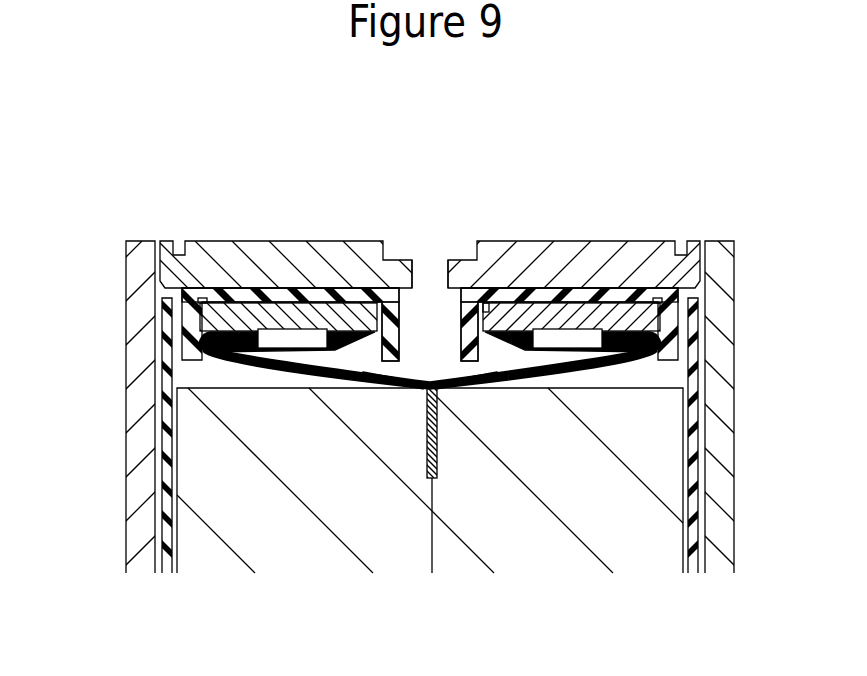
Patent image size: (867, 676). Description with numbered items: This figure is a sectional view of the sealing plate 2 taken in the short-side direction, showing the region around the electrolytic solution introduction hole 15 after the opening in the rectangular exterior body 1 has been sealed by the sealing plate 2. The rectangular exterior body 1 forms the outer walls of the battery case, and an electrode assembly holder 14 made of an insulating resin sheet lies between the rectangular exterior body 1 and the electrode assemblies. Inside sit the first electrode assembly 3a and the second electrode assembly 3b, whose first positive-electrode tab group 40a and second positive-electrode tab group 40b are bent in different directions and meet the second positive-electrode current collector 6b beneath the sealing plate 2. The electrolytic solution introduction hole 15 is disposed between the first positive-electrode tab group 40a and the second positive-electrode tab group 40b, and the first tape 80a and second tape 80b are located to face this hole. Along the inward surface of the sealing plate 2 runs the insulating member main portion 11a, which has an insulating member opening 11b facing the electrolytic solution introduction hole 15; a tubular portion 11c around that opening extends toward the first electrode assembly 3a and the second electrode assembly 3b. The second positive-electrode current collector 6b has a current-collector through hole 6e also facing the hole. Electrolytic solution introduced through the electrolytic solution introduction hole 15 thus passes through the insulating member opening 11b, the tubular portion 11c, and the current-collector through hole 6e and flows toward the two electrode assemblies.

The rectangular exterior body 1 is at (142, 520).
The sealing plate 2 is at (276, 260).
The first electrode assembly 3a is at (248, 543).
The second electrode assembly 3b is at (618, 543).
The second positive-electrode current collector 6b is at (233, 312).
The current-collector through hole 6e is at (486, 316).
The insulating member main portion 11a is at (302, 297).
The insulating member opening 11b is at (400, 307).
The tubular portion 11c is at (387, 312).
The electrode assembly holder 14 is at (167, 468).
The electrolytic solution introduction hole 15 is at (430, 262).
The first positive-electrode tab group 40a is at (200, 340).
The second positive-electrode tab group 40b is at (660, 335).
The first tape 80a is at (428, 457).
The second tape 80b is at (438, 455).